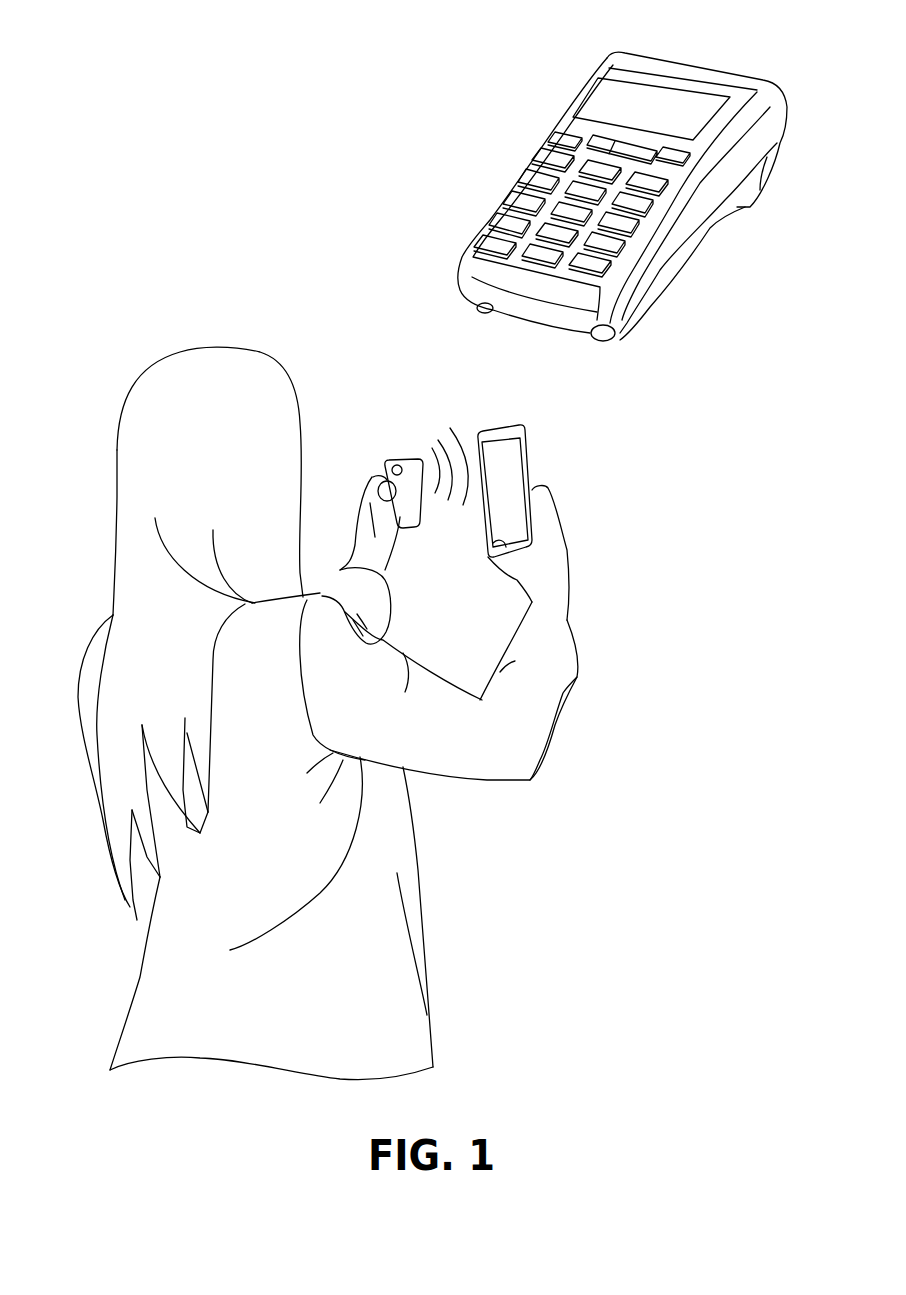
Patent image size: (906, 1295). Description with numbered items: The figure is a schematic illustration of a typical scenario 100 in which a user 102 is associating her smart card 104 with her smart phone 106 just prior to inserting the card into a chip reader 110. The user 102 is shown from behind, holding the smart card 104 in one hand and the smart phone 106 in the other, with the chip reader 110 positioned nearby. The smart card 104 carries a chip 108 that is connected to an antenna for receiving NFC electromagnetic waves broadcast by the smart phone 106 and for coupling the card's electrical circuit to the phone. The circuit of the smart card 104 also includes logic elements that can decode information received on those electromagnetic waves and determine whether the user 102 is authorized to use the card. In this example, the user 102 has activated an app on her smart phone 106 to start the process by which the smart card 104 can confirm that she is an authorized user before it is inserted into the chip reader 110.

The scenario 100 is at (174, 87).
The user 102 is at (117, 453).
The smart card 104 is at (385, 458).
The smart phone 106 is at (525, 433).
The chip 108 is at (397, 458).
The chip reader 110 is at (742, 72).